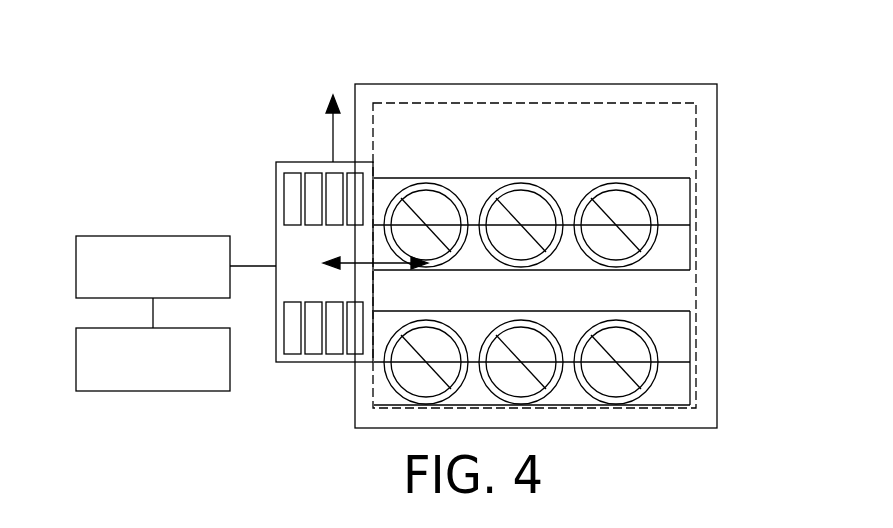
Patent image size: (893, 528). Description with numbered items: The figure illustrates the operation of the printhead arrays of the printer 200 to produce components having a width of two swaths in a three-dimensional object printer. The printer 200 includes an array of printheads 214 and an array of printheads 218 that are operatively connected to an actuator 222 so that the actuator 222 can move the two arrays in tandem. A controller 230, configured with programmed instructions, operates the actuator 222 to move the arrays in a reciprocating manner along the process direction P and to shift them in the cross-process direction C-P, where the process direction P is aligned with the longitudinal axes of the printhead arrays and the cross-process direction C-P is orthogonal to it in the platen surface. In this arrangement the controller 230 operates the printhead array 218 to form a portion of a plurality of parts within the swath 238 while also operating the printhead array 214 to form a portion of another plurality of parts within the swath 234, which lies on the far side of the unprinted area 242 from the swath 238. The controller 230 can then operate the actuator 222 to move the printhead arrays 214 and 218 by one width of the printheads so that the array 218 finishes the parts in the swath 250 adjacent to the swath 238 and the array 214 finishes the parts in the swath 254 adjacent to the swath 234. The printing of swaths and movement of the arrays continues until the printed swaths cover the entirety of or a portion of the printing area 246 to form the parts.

The printer 200 is at (258, 84).
The array of printheads 214 is at (277, 188).
The array of printheads 218 is at (316, 362).
The actuator 222 is at (77, 268).
The controller 230 is at (77, 360).
The swath 234 is at (681, 248).
The swath 238 is at (680, 387).
The unprinted area 242 is at (680, 287).
The printing area 246 is at (548, 151).
The swath 250 is at (680, 335).
The swath 254 is at (653, 203).
The process direction P is at (392, 264).
The cross-process direction C-P is at (332, 137).